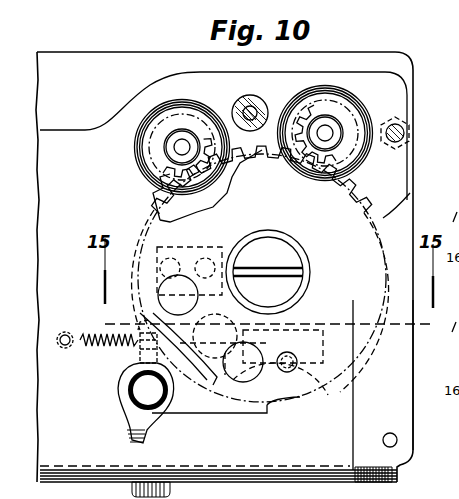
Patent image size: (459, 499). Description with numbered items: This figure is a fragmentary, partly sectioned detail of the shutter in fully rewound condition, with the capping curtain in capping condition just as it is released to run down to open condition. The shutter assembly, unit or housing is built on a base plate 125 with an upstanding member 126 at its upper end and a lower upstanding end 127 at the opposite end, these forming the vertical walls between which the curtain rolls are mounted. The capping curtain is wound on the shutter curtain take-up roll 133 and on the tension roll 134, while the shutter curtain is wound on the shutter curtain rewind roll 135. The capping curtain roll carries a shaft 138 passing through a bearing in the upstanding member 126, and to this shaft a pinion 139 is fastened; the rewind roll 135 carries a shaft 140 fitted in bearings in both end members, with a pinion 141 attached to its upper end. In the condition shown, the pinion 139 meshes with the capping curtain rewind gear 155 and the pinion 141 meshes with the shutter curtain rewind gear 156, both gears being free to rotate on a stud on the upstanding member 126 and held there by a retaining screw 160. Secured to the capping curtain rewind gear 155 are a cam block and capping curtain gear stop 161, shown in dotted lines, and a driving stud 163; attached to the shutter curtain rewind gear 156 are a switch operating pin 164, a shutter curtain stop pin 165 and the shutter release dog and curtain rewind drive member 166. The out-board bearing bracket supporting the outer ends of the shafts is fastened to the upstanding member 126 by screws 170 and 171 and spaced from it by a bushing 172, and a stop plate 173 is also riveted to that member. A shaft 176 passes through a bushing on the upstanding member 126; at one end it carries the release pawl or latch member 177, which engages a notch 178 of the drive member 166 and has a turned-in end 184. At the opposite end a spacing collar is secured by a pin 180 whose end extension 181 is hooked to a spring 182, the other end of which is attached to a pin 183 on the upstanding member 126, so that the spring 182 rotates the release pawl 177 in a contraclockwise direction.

The base plate 125 is at (393, 473).
The upstanding member 126 is at (340, 412).
The lower upstanding end 127 is at (402, 417).
The shutter curtain take-up roll 133 is at (150, 131).
The tension roll 134 is at (178, 168).
The shutter curtain rewind roll 135 is at (326, 134).
The shaft 138 is at (182, 147).
The pinion 139 is at (163, 160).
The shaft 140 is at (343, 124).
The pinion 141 is at (347, 162).
The capping curtain rewind gear 155 is at (160, 206).
The shutter curtain rewind gear 156 is at (357, 191).
The retaining screw 160 is at (287, 254).
The cam block and capping curtain gear stop 161 is at (205, 251).
The driving stud 163 is at (247, 305).
The switch operating pin 164 is at (258, 342).
The shutter curtain stop pin 165 is at (195, 303).
The shutter release dog and curtain rewind drive member 166 is at (287, 328).
The screw 170 is at (404, 133).
The screw 171 is at (262, 108).
The bushing 172 is at (239, 103).
The stop plate 173 is at (211, 418).
The shaft 176 is at (131, 391).
The release pawl or latch member 177 is at (186, 413).
The notch 178 is at (270, 408).
The pin 180 is at (140, 353).
The end extension 181 is at (137, 318).
The spring 182 is at (86, 348).
The pin 183 is at (64, 332).
The turned-in end 184 is at (130, 439).